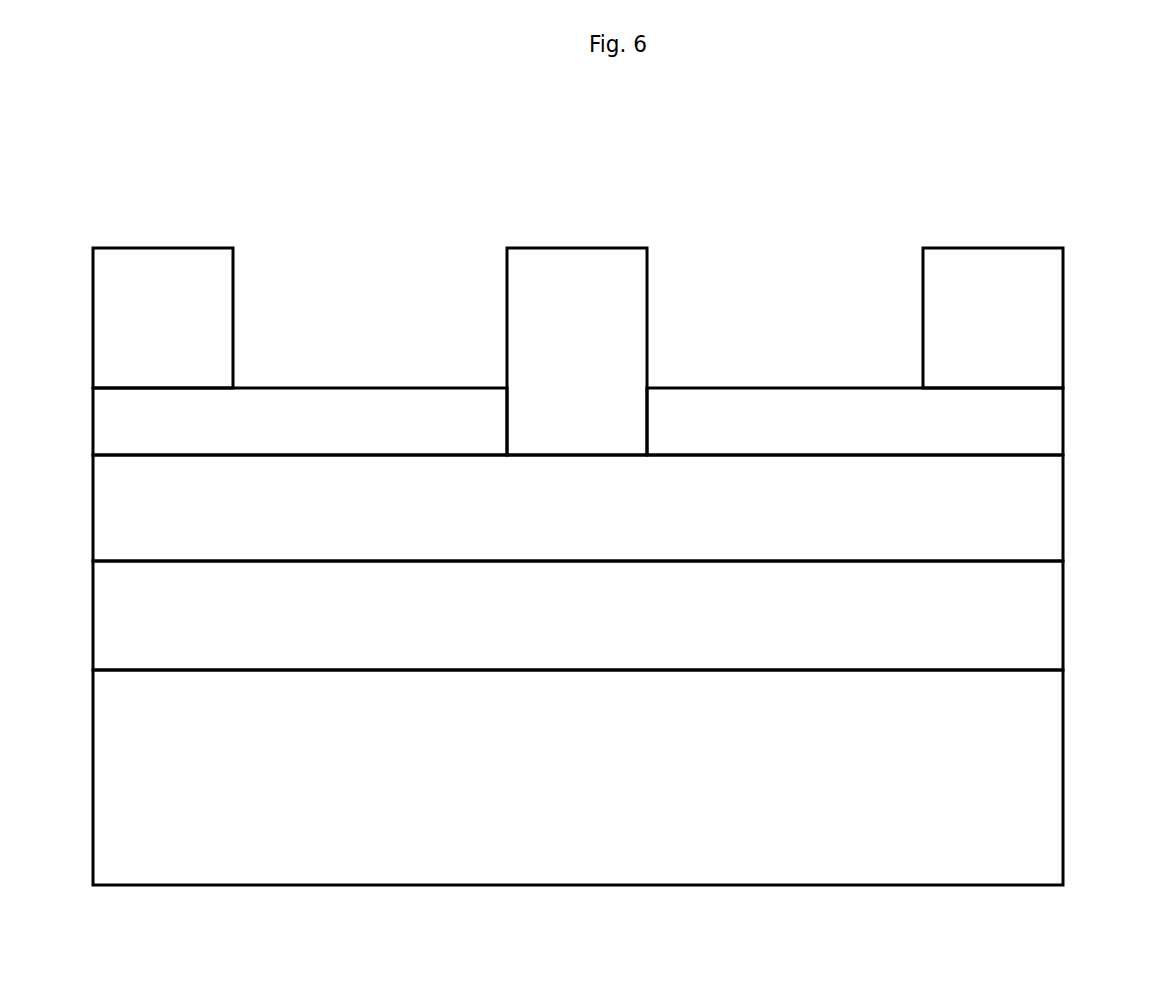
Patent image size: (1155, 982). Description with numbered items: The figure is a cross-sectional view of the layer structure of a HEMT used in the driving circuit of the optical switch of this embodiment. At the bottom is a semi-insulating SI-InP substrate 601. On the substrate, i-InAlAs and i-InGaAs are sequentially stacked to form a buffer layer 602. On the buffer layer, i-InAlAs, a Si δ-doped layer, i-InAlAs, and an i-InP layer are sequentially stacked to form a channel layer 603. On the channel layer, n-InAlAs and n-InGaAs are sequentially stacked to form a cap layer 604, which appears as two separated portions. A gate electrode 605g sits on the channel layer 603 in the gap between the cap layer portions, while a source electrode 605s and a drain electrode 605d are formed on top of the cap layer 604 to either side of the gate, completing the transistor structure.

The SI-InP substrate 601 is at (1048, 779).
The buffer layer 602 is at (1048, 619).
The channel layer 603 is at (1048, 511).
The cap layer 604 is at (338, 402).
The source electrode 605s is at (168, 257).
The gate electrode 605g is at (576, 257).
The drain electrode 605d is at (993, 257).